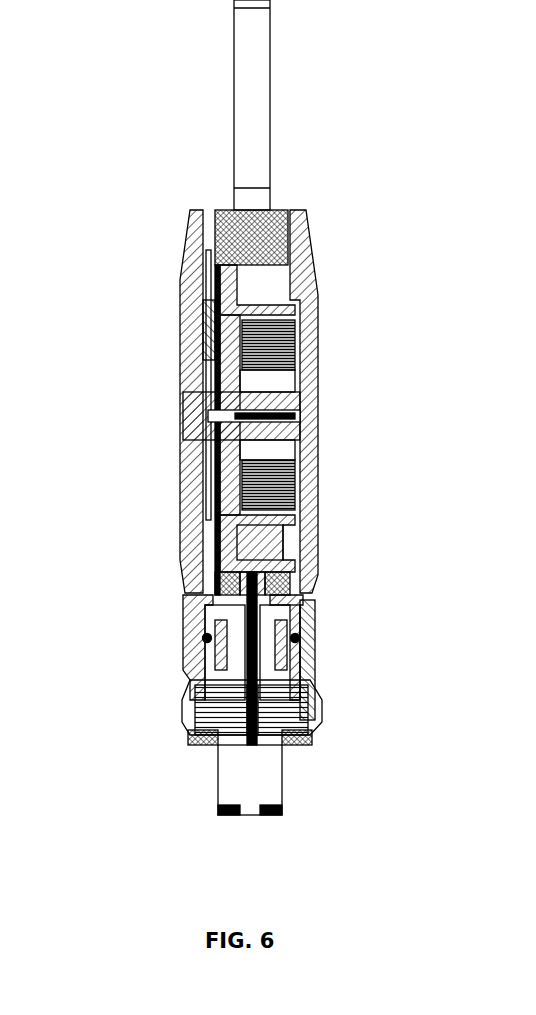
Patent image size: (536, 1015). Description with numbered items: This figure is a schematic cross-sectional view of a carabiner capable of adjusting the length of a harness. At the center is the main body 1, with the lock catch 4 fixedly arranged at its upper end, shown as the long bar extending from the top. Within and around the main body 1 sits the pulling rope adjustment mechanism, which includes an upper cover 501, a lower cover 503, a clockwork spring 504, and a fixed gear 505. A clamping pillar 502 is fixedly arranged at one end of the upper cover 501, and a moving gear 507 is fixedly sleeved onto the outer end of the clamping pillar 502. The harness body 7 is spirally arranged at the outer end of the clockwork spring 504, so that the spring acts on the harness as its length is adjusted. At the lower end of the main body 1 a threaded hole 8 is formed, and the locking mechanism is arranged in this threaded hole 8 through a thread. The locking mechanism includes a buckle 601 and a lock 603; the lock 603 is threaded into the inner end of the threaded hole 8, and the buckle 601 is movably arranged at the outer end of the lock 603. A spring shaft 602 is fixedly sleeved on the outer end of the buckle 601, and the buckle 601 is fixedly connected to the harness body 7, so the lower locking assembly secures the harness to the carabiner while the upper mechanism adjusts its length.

The lock catch 4 is at (248, 42).
The main body 1 is at (281, 210).
The lower cover 503 is at (308, 238).
The fixed gear 505 is at (213, 290).
The moving gear 507 is at (204, 342).
The upper cover 501 is at (185, 437).
The clockwork spring 504 is at (296, 352).
The clamping pillar 502 is at (225, 402).
The threaded hole 8 is at (212, 578).
The harness body 7 is at (253, 610).
The lock 603 is at (291, 618).
The spring shaft 602 is at (303, 672).
The buckle 601 is at (196, 738).